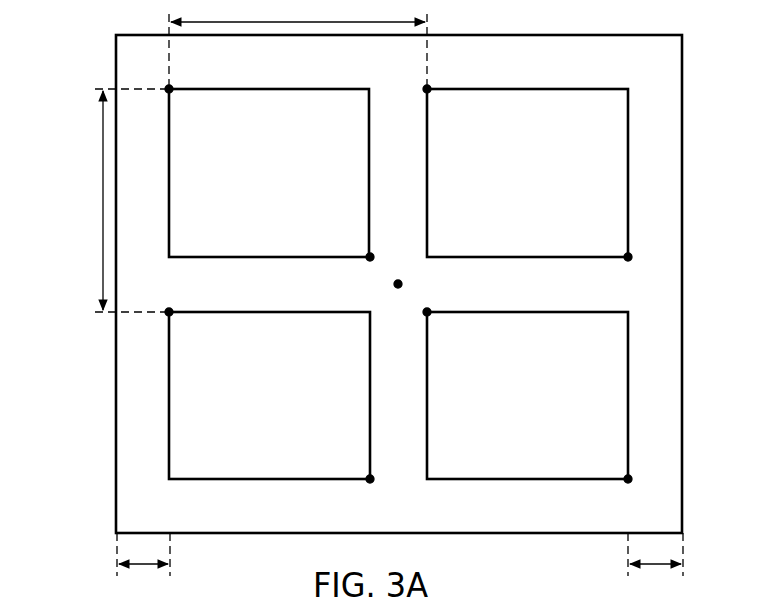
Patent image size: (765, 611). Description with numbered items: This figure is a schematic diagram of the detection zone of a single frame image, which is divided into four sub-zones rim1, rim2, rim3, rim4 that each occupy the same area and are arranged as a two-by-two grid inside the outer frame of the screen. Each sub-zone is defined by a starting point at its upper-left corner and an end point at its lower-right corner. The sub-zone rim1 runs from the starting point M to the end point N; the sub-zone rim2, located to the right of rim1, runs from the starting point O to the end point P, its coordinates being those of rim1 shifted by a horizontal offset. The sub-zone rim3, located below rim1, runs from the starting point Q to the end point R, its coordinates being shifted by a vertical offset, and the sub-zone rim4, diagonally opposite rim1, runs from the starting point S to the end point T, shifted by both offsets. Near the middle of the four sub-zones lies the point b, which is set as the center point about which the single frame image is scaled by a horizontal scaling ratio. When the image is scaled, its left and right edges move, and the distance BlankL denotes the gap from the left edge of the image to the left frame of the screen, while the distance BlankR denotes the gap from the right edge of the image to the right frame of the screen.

The sub-zone rim1 is at (269, 173).
The sub-zone rim2 is at (527, 173).
The sub-zone rim3 is at (269, 395).
The sub-zone rim4 is at (527, 395).
The distance Blank_L BlankL is at (145, 566).
The distance Blank_R BlankR is at (658, 566).
The starting point of sub-zone rim1 M is at (172, 88).
The starting point of sub-zone rim2 O is at (430, 88).
The end point of sub-zone rim1 N is at (373, 256).
The end point of sub-zone rim2 P is at (631, 256).
The center point for scaling b is at (400, 281).
The starting point of sub-zone rim3 Q is at (172, 311).
The starting point of sub-zone rim4 S is at (430, 311).
The end point of sub-zone rim3 R is at (373, 478).
The end point of sub-zone rim4 T is at (631, 478).